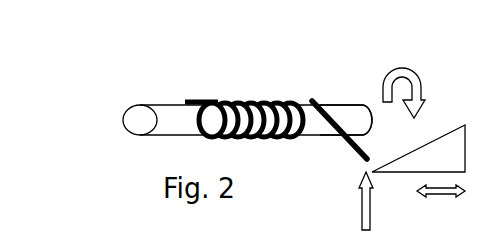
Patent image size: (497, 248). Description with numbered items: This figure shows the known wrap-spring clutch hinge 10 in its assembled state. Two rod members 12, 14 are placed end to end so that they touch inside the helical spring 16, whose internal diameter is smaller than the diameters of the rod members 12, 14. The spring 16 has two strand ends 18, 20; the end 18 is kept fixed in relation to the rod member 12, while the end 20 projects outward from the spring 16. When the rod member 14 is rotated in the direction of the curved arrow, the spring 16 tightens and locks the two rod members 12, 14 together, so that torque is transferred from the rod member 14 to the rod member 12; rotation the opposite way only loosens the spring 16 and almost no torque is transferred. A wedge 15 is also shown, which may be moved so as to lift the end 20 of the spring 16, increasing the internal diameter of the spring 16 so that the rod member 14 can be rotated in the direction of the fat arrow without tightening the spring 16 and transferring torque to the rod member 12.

The hinge 10 is at (92, 87).
The rod member 12 is at (151, 78).
The rod member 14 is at (343, 78).
The wedge 15 is at (461, 168).
The helical spring 16 is at (256, 78).
The strand end 18 is at (198, 78).
The strand end 20 is at (317, 169).